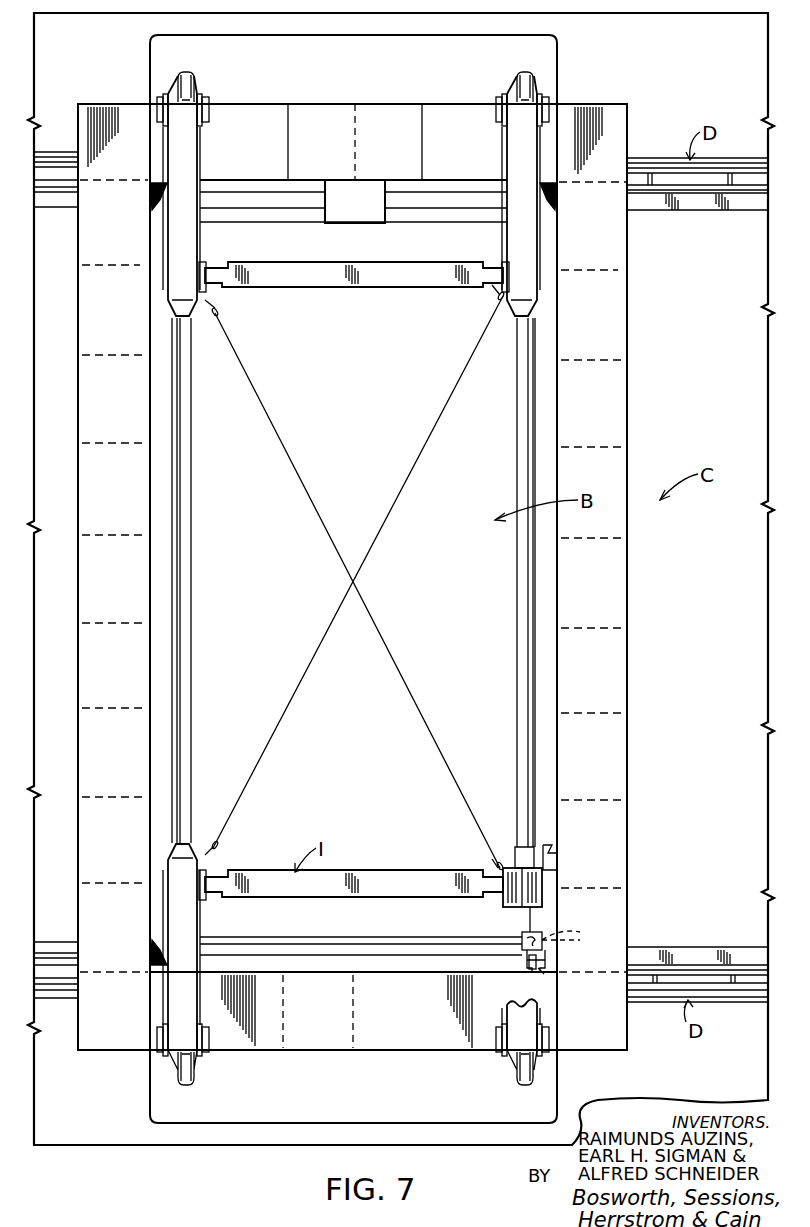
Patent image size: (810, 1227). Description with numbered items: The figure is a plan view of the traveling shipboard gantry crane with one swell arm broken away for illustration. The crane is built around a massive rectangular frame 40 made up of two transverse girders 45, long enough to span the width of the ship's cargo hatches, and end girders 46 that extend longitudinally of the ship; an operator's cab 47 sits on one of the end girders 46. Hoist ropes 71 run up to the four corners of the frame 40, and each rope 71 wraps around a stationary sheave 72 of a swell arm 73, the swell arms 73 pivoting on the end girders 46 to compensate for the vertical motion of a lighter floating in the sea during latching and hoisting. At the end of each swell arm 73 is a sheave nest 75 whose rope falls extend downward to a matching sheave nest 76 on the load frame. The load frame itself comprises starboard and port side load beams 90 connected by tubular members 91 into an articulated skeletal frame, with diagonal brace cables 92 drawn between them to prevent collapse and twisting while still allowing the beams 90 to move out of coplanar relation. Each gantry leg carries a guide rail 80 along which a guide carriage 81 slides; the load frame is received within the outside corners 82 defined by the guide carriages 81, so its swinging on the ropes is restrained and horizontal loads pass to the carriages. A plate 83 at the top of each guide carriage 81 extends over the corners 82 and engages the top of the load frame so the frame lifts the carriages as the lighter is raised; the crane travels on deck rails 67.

The rectangular frame 40 is at (612, 668).
The transverse girder 45 is at (78, 690).
The end girder 46 is at (274, 104).
The operator's cab 47 is at (400, 112).
The rail 67 is at (708, 192).
The hoist rope 71 is at (186, 72).
The stationary sheave 72 is at (158, 106).
The swell arm 73 is at (190, 156).
The sheave nest 75 is at (208, 270).
The sheave nest 76 is at (503, 890).
The guide rail 80 is at (548, 962).
The guide carriage 81 is at (529, 961).
The outside corner 82 is at (579, 937).
The plate 83 is at (542, 935).
The load beam 90 is at (334, 288).
The tubular member 91 is at (192, 562).
The cable 92 is at (373, 625).